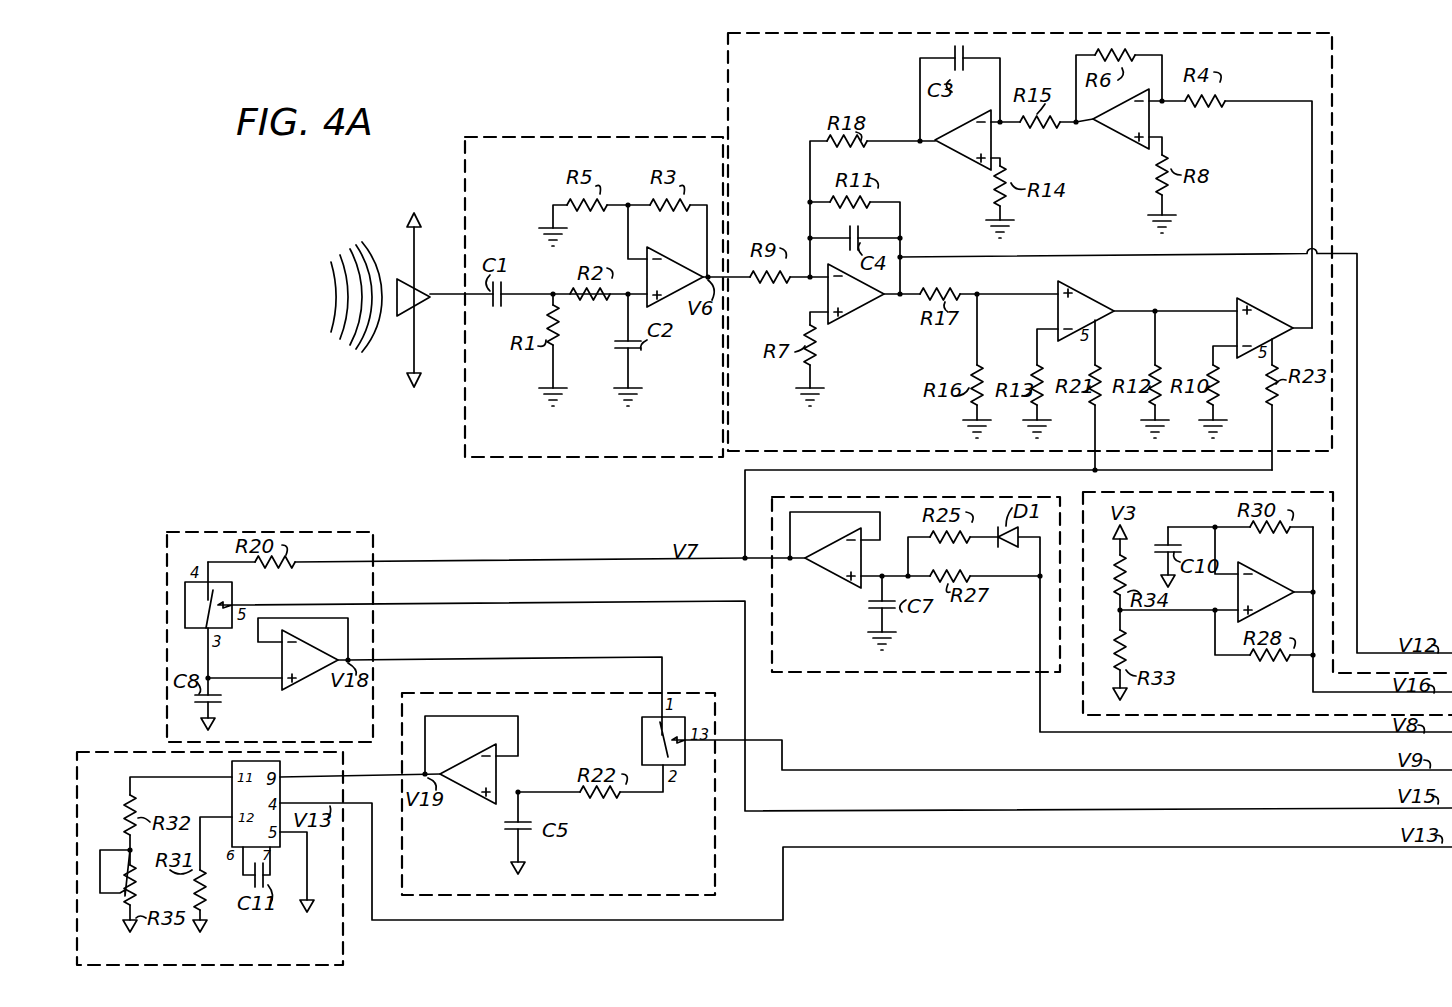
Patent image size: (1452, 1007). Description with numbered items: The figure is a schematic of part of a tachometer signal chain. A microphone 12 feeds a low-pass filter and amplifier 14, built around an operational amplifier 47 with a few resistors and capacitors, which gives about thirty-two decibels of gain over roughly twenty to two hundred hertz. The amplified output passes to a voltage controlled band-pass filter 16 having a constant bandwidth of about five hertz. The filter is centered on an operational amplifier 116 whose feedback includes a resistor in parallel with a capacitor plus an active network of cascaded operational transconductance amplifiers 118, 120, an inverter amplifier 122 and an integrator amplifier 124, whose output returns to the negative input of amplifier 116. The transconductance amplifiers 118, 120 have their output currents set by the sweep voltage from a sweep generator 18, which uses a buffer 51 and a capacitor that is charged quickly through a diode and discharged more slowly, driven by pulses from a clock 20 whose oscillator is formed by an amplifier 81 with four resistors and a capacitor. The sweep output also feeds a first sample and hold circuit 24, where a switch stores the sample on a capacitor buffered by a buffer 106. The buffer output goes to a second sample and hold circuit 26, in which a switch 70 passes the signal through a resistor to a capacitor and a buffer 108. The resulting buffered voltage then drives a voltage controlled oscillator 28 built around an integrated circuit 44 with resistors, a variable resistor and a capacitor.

The microphone 12 is at (424, 303).
The low-pass filter and amplifier 14 is at (591, 137).
The voltage controlled band-pass filter 16 is at (1332, 142).
The sweep generator 18 is at (894, 673).
The clock 20 is at (1265, 493).
The first sample and hold circuit 24 is at (167, 562).
The second sample and hold circuit 26 is at (715, 855).
The voltage controlled oscillator 28 is at (123, 753).
The integrated circuit 44 is at (232, 798).
The operational amplifier 47 is at (691, 268).
The buffer 51 is at (832, 575).
The switch 70 is at (641, 739).
The amplifier 81 is at (1252, 573).
The buffer 106 is at (316, 674).
The buffer 108 is at (476, 794).
The operational amplifier 116 is at (848, 311).
The operational transconductance amplifier 118 is at (1090, 280).
The operational transconductance amplifier 120 is at (1268, 284).
The amplifier 122 is at (1110, 127).
The amplifier 124 is at (976, 165).